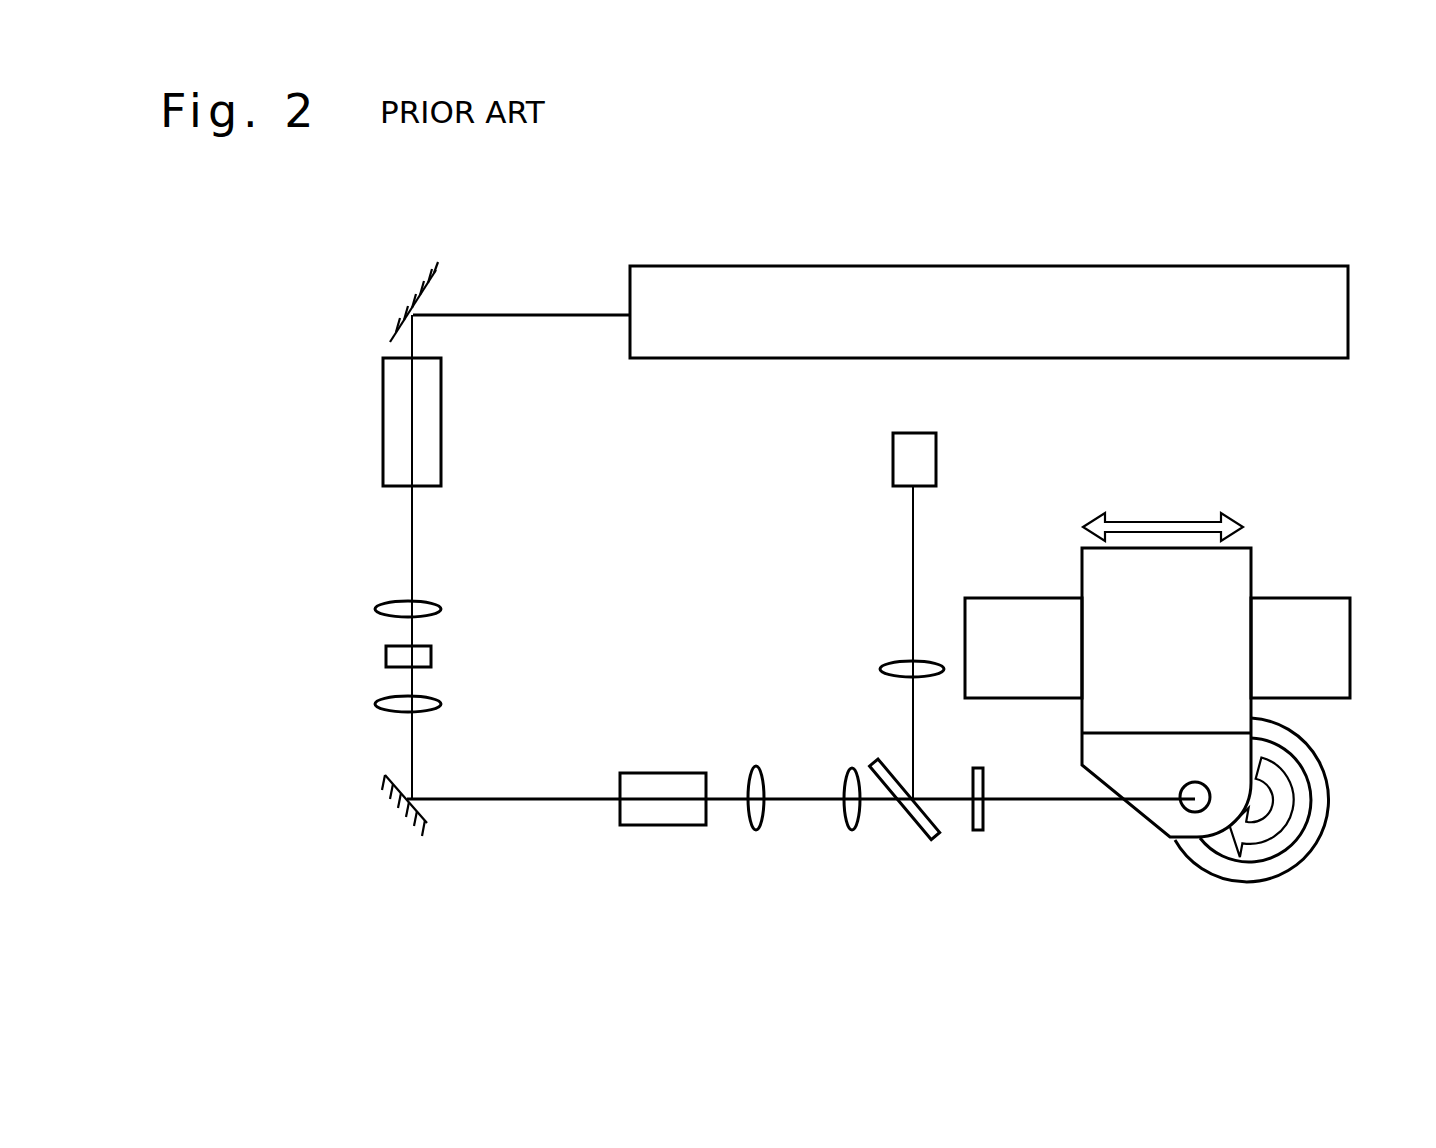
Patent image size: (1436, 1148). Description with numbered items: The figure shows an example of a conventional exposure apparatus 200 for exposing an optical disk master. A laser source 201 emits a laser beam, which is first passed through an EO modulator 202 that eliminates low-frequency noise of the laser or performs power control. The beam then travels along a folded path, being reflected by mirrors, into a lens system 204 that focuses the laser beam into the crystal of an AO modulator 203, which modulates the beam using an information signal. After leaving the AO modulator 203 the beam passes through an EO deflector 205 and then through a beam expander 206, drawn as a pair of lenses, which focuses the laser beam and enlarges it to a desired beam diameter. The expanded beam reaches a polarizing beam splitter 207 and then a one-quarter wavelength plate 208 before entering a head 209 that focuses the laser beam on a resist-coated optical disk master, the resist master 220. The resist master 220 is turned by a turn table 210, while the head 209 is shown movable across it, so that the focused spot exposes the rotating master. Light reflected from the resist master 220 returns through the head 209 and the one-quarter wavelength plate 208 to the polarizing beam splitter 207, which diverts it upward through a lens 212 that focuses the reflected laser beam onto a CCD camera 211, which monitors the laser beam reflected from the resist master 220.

The exposure apparatus 200 is at (966, 121).
The laser source 201 is at (1210, 275).
The EO modulator 202 is at (441, 418).
The AO modulator 203 is at (431, 657).
The lens system 204 is at (438, 604).
The EO deflector 205 is at (655, 826).
The beam expander 206 is at (848, 828).
The polarizing beam splitter 207 is at (918, 825).
The quarter wavelength plate 208 is at (977, 830).
The head 209 is at (1243, 563).
The turn table 210 is at (1197, 857).
The CCD camera 211 is at (893, 450).
The lens 212 is at (888, 665).
The resist master 220 is at (1277, 762).